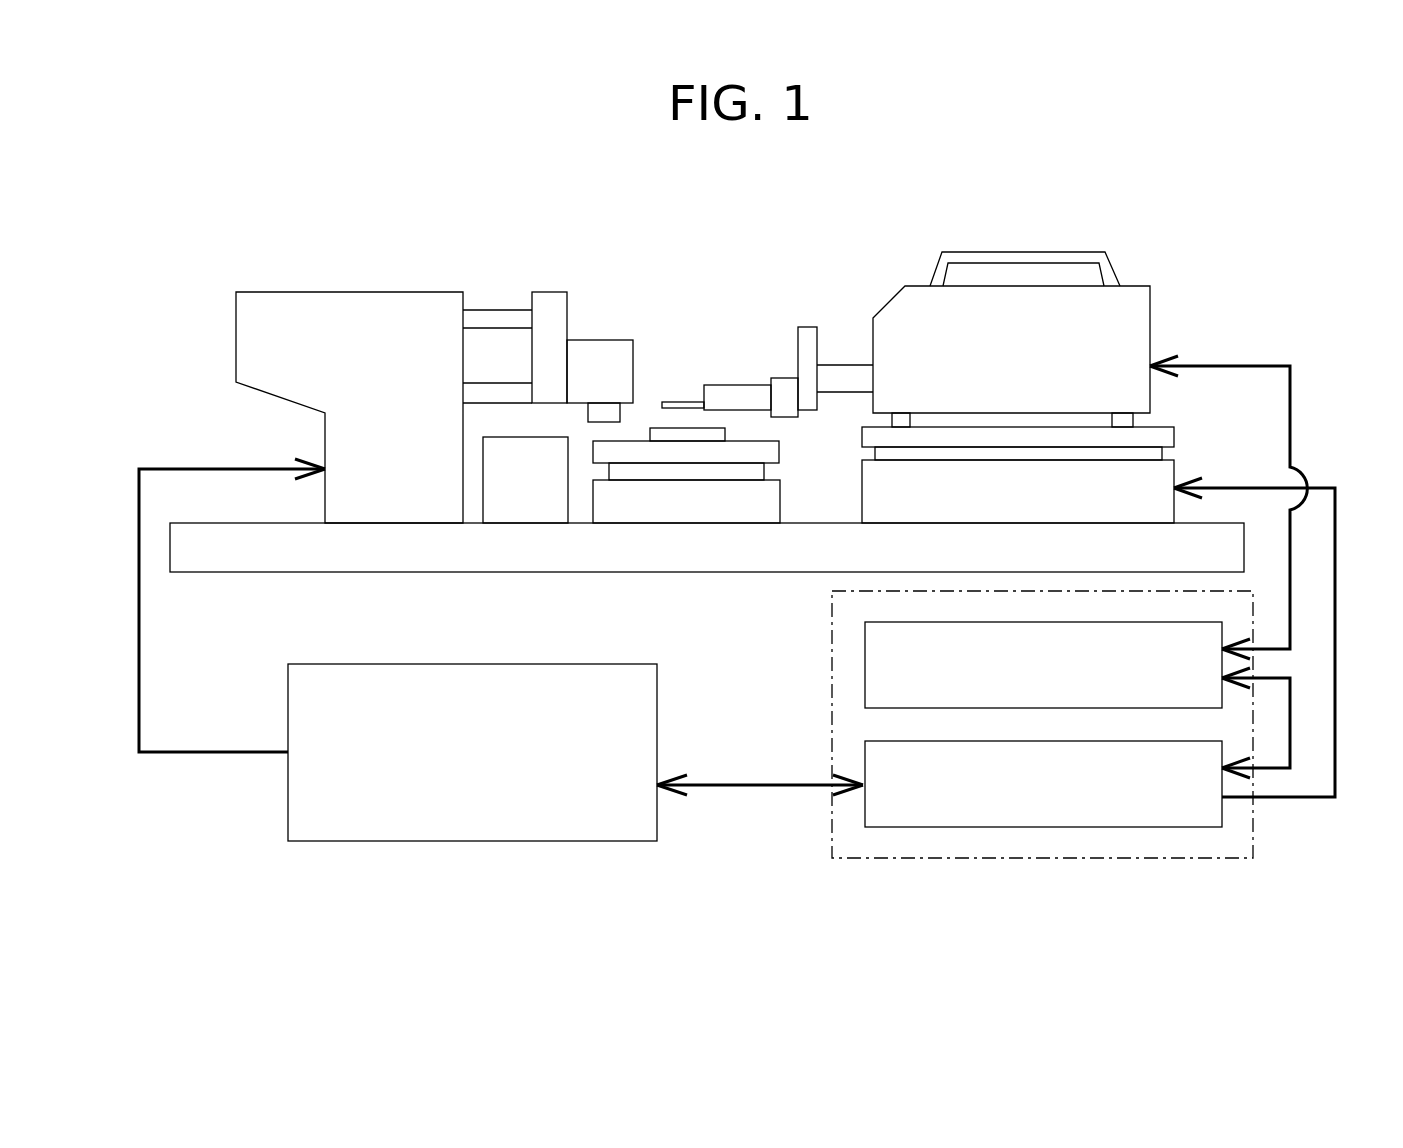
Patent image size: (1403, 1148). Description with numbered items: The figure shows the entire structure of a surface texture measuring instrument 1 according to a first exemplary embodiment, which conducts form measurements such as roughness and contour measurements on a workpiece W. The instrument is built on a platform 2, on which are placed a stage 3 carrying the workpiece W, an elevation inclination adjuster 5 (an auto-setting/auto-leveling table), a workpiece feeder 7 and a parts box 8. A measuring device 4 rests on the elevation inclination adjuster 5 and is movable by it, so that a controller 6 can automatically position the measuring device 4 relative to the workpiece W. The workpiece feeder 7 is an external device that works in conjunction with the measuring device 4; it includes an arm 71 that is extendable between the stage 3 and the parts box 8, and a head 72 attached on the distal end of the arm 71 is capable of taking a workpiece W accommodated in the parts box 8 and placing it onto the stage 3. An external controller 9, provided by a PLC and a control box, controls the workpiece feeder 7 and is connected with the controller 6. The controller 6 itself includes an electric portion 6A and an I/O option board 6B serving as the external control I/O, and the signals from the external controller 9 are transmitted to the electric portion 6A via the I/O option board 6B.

The surface texture measuring instrument 1 is at (314, 201).
The platform 2 is at (722, 572).
The stage 3 is at (768, 453).
The measuring device 4 is at (1141, 316).
The elevation inclination adjuster 5 is at (1160, 475).
The controller 6 is at (1042, 763).
The electric portion 6A is at (1133, 622).
The I/O option board 6B is at (1133, 740).
The workpiece feeder 7 is at (418, 306).
The arm 71 is at (497, 313).
The head 72 is at (605, 410).
The parts box 8 is at (527, 505).
The external controller 9 is at (489, 841).
The workpiece W is at (660, 433).